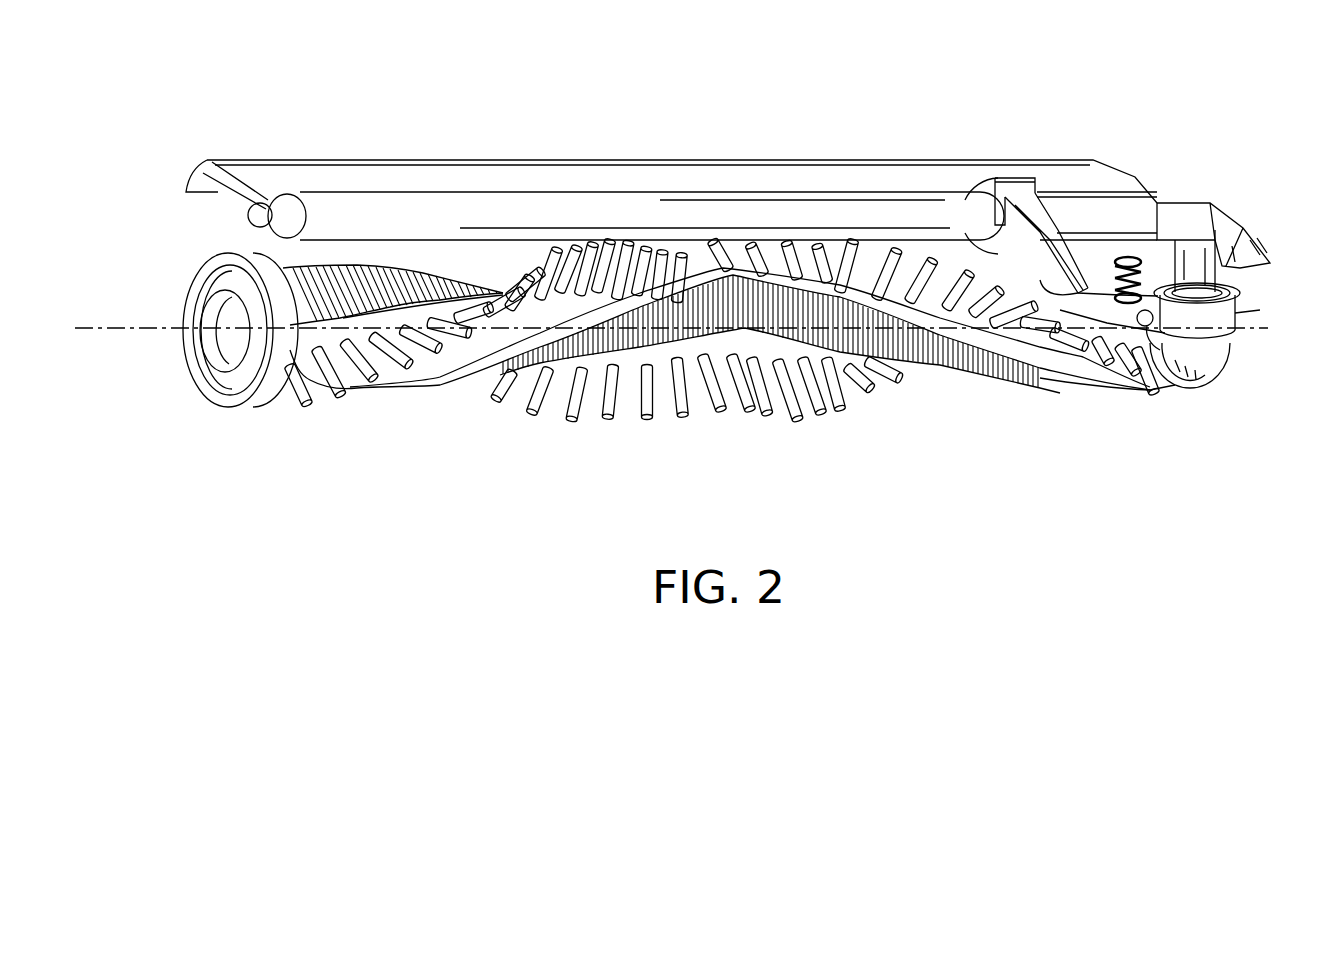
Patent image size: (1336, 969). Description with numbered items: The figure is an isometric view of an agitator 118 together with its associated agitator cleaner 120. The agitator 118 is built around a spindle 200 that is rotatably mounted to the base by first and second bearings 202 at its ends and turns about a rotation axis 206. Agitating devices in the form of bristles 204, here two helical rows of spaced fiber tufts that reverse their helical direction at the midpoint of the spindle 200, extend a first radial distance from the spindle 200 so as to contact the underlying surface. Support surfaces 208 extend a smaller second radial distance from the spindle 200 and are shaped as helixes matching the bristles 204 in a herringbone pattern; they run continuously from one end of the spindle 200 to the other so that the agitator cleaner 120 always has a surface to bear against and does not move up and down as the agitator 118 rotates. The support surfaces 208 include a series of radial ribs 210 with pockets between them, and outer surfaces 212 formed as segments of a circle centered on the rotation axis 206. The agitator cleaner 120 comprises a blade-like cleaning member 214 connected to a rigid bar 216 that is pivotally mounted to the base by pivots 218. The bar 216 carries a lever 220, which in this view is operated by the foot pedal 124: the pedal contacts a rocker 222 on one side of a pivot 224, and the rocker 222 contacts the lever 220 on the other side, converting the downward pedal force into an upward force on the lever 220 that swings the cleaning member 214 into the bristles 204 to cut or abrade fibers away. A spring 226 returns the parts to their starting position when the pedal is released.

The agitator 118 is at (702, 392).
The agitator cleaner 120 is at (655, 161).
The foot pedal 124 is at (1240, 218).
The spindle 200 is at (1048, 346).
The bearings 202 is at (218, 380).
The bristles 204 is at (577, 413).
The rotation axis 206 is at (133, 330).
The support surfaces 208 is at (405, 283).
The radial ribs 210 is at (937, 363).
The outer surfaces 212 is at (812, 256).
The cleaning member 214 is at (218, 193).
The bar 216 is at (393, 200).
The pivots 218 is at (256, 212).
The lever 220 is at (1047, 232).
The rocker 222 is at (1237, 317).
The pivot 224 is at (1162, 339).
The spring 226 is at (1128, 254).